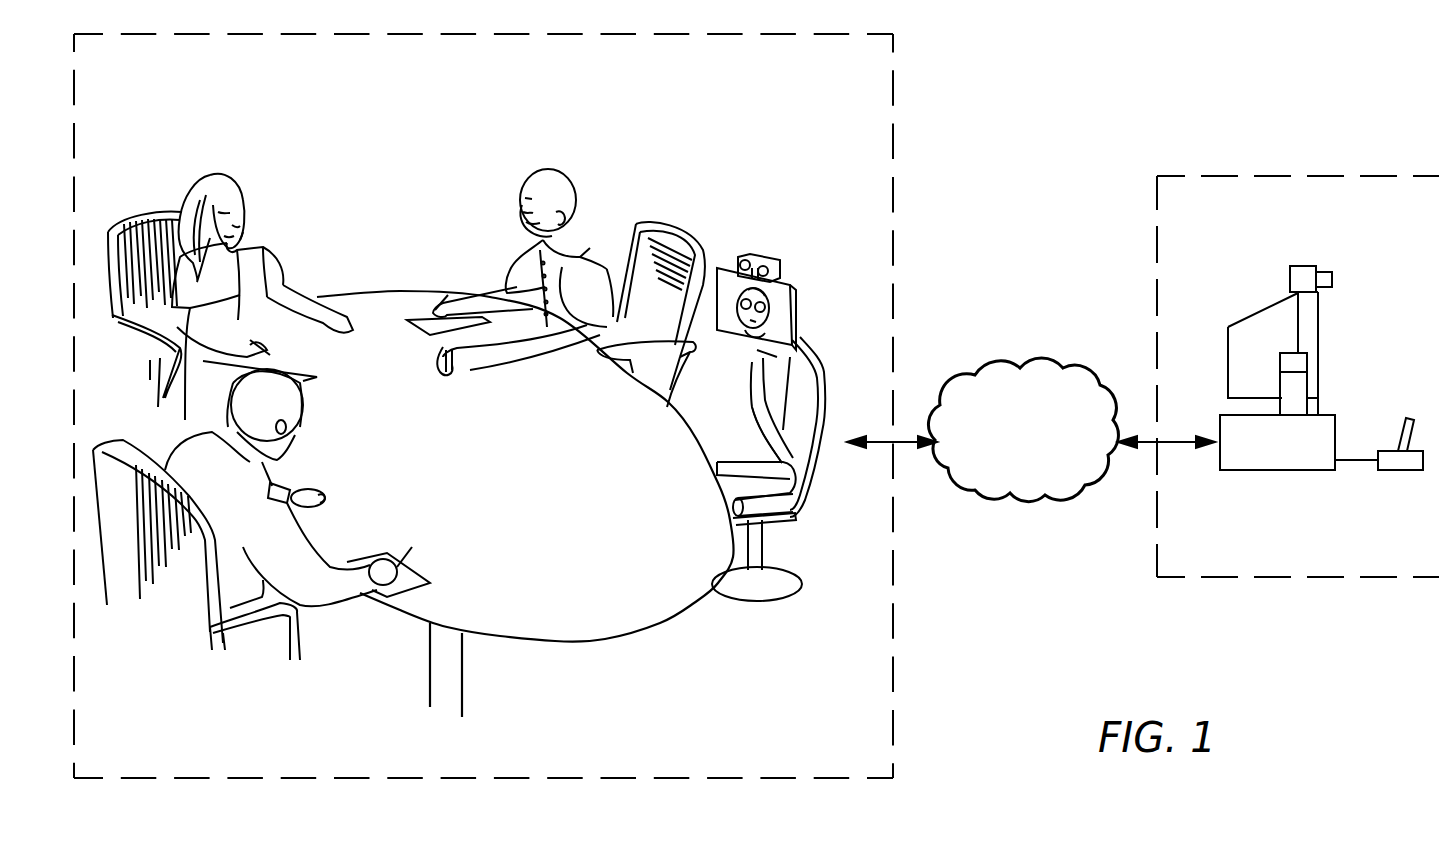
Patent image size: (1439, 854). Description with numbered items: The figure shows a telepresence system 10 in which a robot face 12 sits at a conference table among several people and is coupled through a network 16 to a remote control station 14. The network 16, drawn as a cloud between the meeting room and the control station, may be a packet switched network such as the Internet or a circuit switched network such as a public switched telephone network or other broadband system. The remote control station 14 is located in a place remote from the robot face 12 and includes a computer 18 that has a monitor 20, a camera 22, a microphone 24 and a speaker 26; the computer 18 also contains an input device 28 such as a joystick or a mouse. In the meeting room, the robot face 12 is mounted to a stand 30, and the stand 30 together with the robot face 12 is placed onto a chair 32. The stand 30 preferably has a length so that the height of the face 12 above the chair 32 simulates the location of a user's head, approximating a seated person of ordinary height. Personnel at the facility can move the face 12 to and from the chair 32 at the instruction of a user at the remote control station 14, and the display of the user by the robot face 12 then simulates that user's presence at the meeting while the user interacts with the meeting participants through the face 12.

The telepresence system 10 is at (1031, 363).
The robot face 12 is at (778, 302).
The remote control station 14 is at (1240, 348).
The network 16 is at (1023, 430).
The computer 18 is at (1307, 461).
The monitor 20 is at (1312, 320).
The camera 22 is at (1296, 275).
The microphone 24 is at (1290, 358).
The speaker 26 is at (1302, 405).
The input device 28 is at (1403, 470).
The stand 30 is at (787, 457).
The chair 32 is at (790, 507).